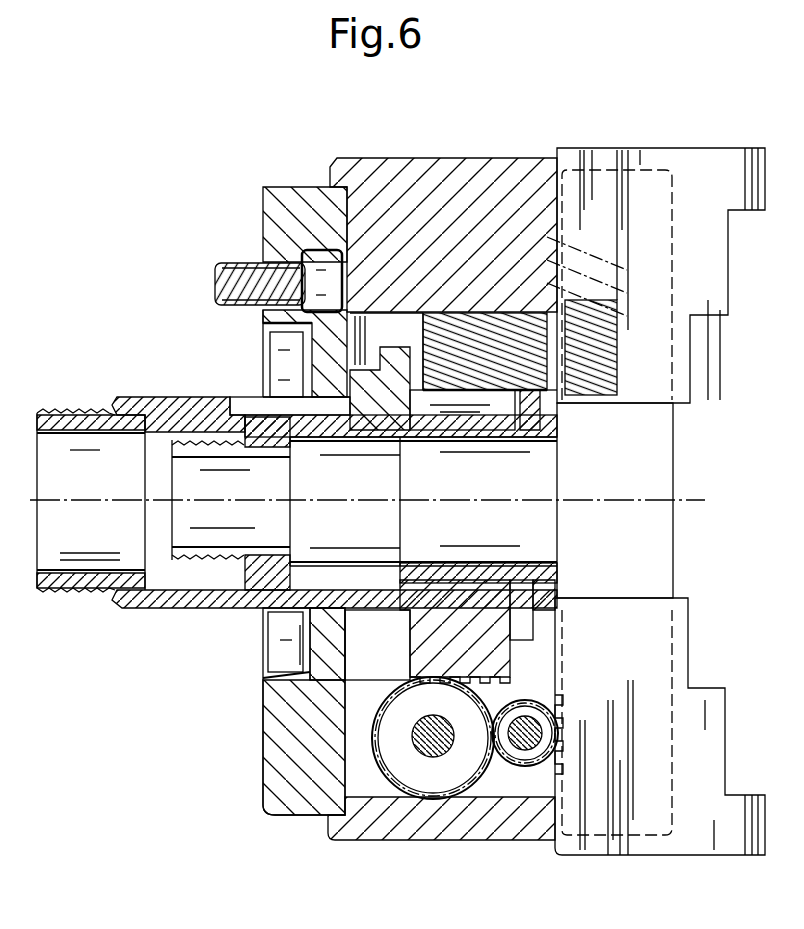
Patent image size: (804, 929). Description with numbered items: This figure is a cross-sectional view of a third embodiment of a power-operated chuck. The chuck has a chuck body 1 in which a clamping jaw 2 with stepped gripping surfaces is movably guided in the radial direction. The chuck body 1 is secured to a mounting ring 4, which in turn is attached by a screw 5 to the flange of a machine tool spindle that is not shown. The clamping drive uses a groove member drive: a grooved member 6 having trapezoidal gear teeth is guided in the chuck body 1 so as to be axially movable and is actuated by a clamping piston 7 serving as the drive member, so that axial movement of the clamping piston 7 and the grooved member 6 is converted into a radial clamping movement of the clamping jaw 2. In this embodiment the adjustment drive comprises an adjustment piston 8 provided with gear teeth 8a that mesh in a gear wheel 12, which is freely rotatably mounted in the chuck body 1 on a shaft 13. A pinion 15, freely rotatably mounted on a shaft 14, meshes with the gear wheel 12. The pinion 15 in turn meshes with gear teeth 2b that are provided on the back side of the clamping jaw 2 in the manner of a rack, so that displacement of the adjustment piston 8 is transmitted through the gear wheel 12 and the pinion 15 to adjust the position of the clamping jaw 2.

The chuck body 1 is at (508, 193).
The clamping jaw 2 is at (692, 178).
The gear teeth 2b is at (560, 715).
The mounting ring 4 is at (280, 765).
The screw 5 is at (233, 277).
The grooved member 6 is at (450, 338).
The clamping piston 7 is at (368, 382).
The adjustment piston 8 is at (428, 640).
The gear teeth 8a is at (474, 672).
The gear wheel 12 is at (405, 765).
The shaft 13 is at (438, 745).
The shaft 14 is at (524, 745).
The pinion 15 is at (537, 770).